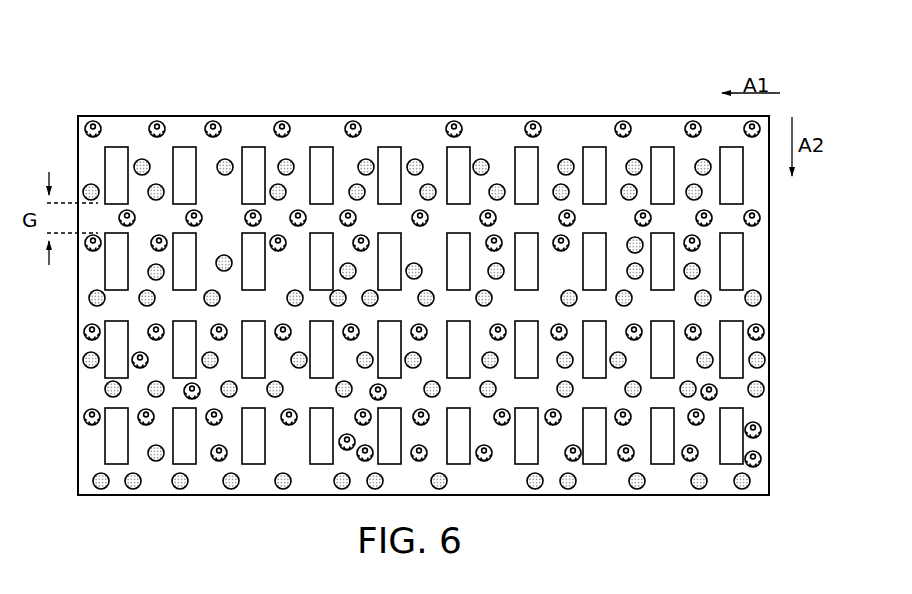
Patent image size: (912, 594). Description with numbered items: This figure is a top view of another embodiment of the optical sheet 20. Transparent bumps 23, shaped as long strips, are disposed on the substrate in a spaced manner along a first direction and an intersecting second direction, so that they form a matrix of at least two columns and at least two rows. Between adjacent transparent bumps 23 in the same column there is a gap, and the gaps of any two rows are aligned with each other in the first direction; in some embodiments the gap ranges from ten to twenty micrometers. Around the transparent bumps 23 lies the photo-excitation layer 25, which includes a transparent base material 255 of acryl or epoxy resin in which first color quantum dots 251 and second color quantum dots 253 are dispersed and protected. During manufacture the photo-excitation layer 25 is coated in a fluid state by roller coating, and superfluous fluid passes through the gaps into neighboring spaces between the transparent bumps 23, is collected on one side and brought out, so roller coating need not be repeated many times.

The optical sheet 20 is at (58, 85).
The transparent bumps 23 is at (320, 155).
The photo-excitation layer 25 is at (185, 133).
The first color quantum dots 251 is at (565, 158).
The second color quantum dots 253 is at (622, 121).
The transparent base material 255 is at (490, 128).